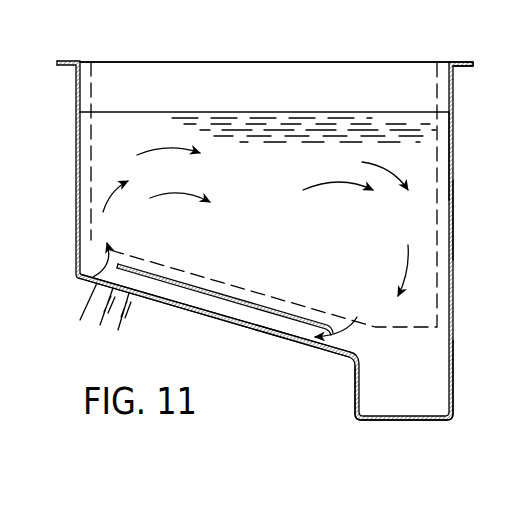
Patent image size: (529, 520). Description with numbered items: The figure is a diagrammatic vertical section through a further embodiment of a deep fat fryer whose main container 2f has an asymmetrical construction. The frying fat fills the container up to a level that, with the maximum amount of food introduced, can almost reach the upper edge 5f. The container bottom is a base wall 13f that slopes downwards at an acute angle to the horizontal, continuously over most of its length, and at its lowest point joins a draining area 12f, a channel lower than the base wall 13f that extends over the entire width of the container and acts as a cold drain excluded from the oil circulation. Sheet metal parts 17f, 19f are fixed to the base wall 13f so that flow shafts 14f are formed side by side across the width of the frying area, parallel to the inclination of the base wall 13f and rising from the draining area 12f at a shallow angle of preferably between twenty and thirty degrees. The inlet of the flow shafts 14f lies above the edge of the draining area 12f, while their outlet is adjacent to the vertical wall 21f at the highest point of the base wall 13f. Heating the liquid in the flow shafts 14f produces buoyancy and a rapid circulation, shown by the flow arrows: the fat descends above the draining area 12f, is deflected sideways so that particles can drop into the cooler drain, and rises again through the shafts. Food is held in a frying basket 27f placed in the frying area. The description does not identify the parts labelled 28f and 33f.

The main container 2f is at (336, 398).
The edge 5f is at (462, 63).
The draining area 12f is at (440, 372).
The base wall 13f is at (266, 330).
The flow shaft 14f is at (210, 309).
The sheet metal part 17f is at (280, 323).
The sheet metal part (insert) 19f is at (218, 296).
The vertical wall 21f is at (228, 72).
The frying basket 27f is at (440, 222).
The side wall inner surface 28f is at (450, 158).
The electrical leads 33f is at (122, 320).